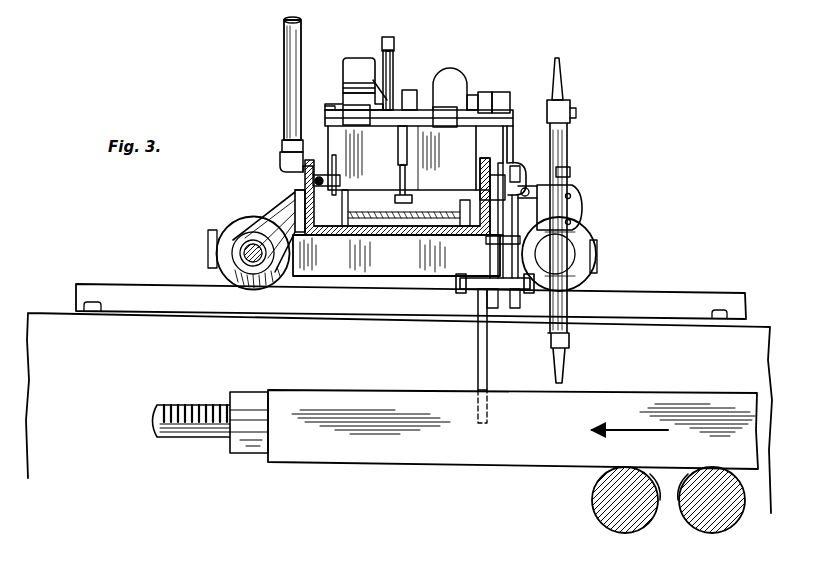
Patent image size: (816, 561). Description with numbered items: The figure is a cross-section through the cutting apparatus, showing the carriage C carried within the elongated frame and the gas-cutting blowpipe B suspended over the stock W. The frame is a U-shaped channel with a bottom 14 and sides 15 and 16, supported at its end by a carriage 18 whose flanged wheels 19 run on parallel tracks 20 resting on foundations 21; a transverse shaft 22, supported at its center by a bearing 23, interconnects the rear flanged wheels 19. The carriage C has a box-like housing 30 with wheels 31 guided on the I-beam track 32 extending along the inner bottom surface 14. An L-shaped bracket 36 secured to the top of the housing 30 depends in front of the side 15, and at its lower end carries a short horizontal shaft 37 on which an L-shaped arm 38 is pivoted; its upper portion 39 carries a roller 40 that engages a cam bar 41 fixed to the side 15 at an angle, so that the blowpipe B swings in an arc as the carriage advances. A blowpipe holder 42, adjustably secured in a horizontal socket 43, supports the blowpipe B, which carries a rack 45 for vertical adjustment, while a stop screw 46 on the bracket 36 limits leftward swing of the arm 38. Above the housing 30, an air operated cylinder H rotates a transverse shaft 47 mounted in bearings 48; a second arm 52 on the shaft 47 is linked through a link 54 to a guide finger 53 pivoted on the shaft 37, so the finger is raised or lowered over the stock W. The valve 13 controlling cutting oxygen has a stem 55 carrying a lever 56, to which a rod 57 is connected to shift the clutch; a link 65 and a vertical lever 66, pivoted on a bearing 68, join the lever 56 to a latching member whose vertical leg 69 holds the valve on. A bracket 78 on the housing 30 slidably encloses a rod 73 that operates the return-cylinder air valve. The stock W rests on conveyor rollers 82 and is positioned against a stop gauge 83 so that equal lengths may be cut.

The valve 13 is at (344, 71).
The bottom 14 is at (420, 238).
The side 15 is at (490, 180).
The side 16 is at (296, 206).
The carriage 18 is at (333, 277).
The flanged wheels 19 is at (220, 243).
The tracks 20 is at (117, 283).
The foundations 21 is at (72, 376).
The transverse shaft 22 is at (240, 253).
The bearing 23 is at (277, 218).
The housing 30 is at (335, 133).
The wheels 31 is at (341, 198).
The track 32 is at (372, 228).
The L-shaped bracket 36 is at (511, 122).
The horizontal shaft 37 is at (458, 287).
The L-shaped arm 38 is at (520, 252).
The upper portion 39 is at (517, 160).
The roller 40 is at (481, 165).
The cam bar 41 is at (480, 192).
The blowpipe holder 42 is at (560, 202).
The horizontal socket 43 is at (560, 180).
The rack 45 is at (571, 135).
The stop screw 46 is at (512, 198).
The transverse shaft 47 is at (470, 95).
The bearings 48 is at (410, 90).
The second arm 52 is at (502, 92).
The guide finger 53 is at (478, 355).
The link 54 is at (488, 240).
The stem 55 is at (382, 88).
The lever 56 is at (394, 78).
The rod 57 is at (368, 101).
The link 65 is at (392, 38).
The vertical lever 66 is at (398, 156).
The bearing 68 is at (357, 126).
The vertical leg 69 is at (400, 181).
The rod 73 is at (313, 181).
The bracket 78 is at (300, 157).
The rollers 82 is at (640, 515).
The stop gauge 83 is at (246, 455).
The carriage C is at (362, 116).
The air operated cylinder H is at (450, 70).
The gas-cutting blowpipe B is at (560, 253).
The stock W is at (408, 450).